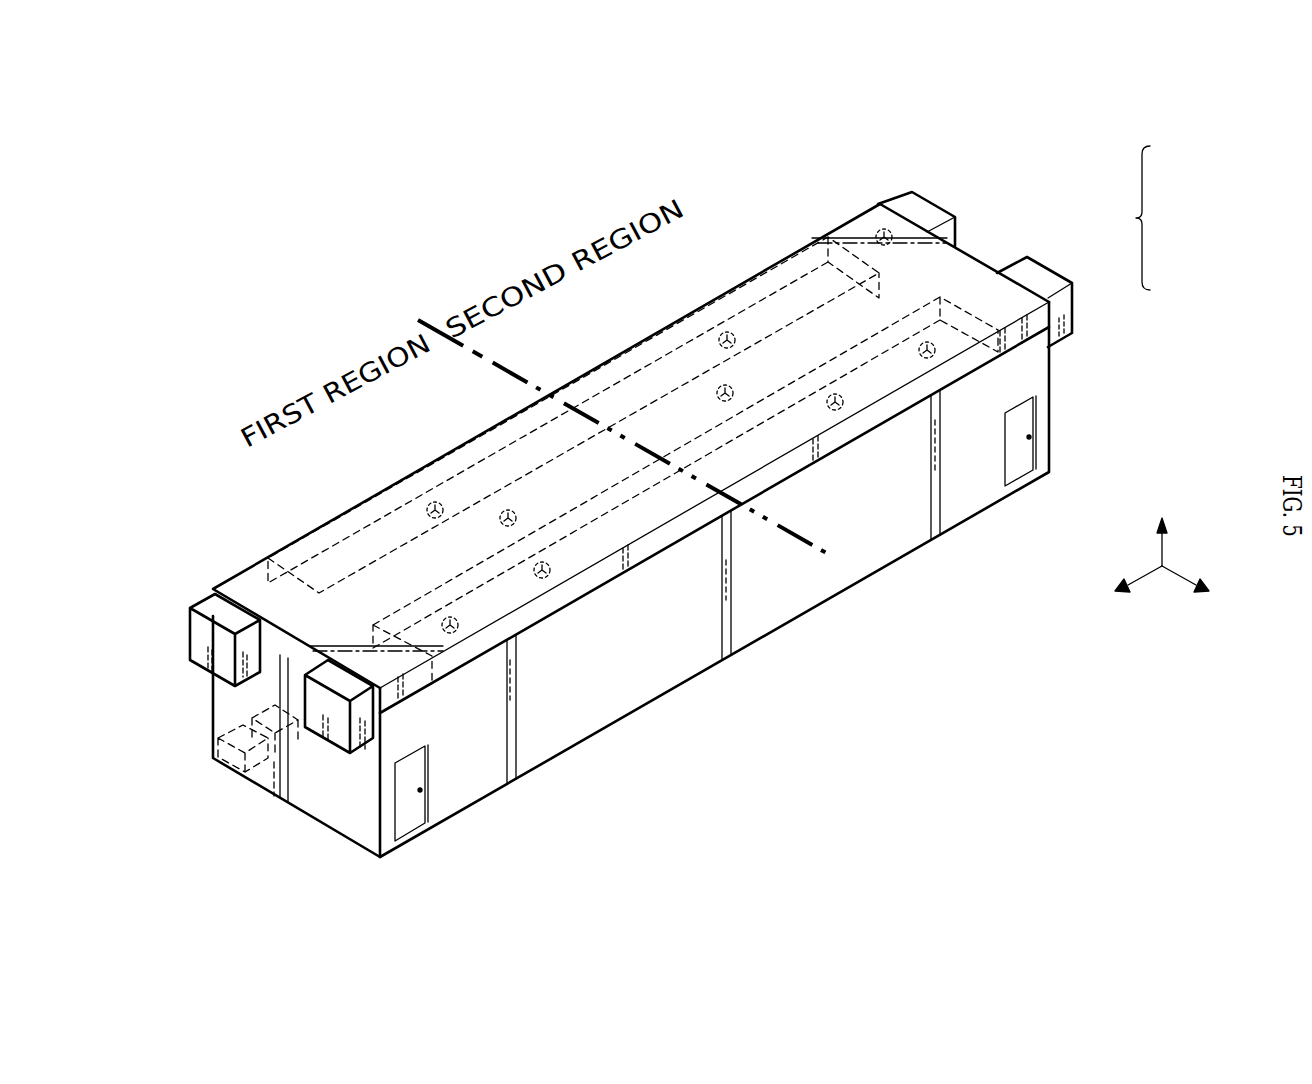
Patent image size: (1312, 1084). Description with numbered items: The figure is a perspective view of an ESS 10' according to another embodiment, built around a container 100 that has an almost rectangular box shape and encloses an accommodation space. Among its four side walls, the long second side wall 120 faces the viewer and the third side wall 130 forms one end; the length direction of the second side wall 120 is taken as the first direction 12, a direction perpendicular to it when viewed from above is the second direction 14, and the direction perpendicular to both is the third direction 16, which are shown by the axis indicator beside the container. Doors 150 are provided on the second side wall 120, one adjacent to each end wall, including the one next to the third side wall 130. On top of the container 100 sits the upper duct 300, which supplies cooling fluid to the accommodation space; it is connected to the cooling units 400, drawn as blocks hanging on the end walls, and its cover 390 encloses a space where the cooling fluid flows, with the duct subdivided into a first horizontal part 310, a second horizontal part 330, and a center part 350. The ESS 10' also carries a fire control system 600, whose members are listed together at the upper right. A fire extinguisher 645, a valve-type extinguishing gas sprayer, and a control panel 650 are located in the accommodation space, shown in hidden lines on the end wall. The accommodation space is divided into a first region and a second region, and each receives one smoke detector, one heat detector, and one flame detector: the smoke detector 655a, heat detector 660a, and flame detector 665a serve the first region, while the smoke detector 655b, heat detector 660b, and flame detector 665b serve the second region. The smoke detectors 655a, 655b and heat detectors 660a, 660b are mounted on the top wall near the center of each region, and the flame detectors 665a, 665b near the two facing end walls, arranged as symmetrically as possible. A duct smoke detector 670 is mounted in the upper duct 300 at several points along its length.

The ESS 10' is at (315, 299).
The container 100 is at (1072, 384).
The second side wall 120 is at (683, 668).
The third side wall 130 is at (340, 818).
The door 150 is at (1023, 468).
The upper duct 300 is at (205, 548).
The first horizontal part 310 is at (876, 220).
The second horizontal part 330 is at (248, 578).
The center part 350 is at (385, 578).
The cover 390 is at (757, 278).
The cooling unit 400 is at (192, 600).
The fire control system 600 is at (1152, 218).
The fire extinguisher 645 is at (227, 737).
The control panel 650 is at (257, 716).
The smoke detector 655a is at (427, 512).
The smoke detector 655b is at (836, 410).
The heat detector 660a is at (545, 578).
The heat detector 660b is at (720, 337).
The flame detector 665a is at (453, 631).
The flame detector 665b is at (931, 357).
The duct smoke detector 670 is at (502, 513).
The first direction 12 is at (1125, 588).
The second direction 14 is at (1198, 588).
The third direction 16 is at (1161, 527).